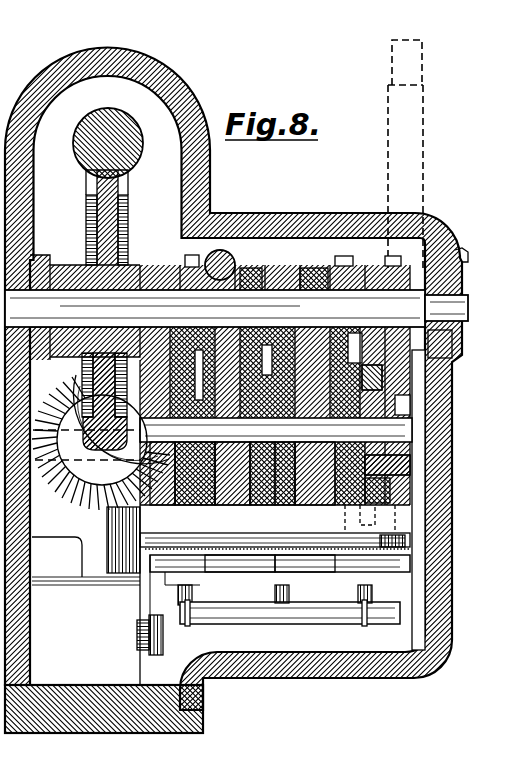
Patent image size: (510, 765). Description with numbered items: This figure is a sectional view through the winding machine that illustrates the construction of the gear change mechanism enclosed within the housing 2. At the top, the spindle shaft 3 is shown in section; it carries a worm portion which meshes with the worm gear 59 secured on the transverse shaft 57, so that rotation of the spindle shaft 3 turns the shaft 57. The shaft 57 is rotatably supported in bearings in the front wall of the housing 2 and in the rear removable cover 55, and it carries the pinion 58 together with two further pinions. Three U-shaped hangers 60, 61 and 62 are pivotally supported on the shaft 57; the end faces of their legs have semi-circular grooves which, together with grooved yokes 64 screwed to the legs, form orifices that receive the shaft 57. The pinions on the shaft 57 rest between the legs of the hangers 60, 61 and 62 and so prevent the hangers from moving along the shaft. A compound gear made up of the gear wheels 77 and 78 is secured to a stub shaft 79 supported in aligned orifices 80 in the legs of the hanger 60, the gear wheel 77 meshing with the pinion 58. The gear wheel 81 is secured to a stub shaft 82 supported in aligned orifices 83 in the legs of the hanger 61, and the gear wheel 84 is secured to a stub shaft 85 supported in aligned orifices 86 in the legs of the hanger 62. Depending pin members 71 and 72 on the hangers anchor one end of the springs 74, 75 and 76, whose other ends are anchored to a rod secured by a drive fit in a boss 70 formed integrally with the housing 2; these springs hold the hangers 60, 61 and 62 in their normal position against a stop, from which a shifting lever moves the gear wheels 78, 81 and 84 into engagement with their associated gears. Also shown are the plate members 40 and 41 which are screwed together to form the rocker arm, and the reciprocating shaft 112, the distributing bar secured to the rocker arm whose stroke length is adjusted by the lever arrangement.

The housing 2 is at (233, 389).
The spindle shaft 3 is at (112, 120).
The worm gear 59 is at (86, 205).
The pinion 58 is at (388, 267).
The reciprocating shaft 112 is at (222, 258).
The stub shaft 82 is at (258, 267).
The aligned orifices 83 is at (312, 266).
The yoke 64 is at (398, 215).
The rear removable cover 55 is at (460, 250).
The transverse shaft 57 is at (468, 300).
The gear wheel 77 is at (455, 346).
The stub shaft 79 is at (412, 430).
The aligned orifices 80 is at (415, 470).
The gear wheel 78 is at (385, 483).
The gear wheel 84 is at (197, 505).
The gear wheel 81 is at (282, 505).
The U-shaped hanger 60 is at (410, 568).
The depending pin member 71 is at (373, 592).
The depending pin member 72 is at (290, 592).
The spring 74 is at (366, 622).
The spring 75 is at (192, 592).
The spring 76 is at (190, 618).
The U-shaped hanger 62 is at (233, 600).
The U-shaped hanger 61 is at (278, 575).
The aligned orifices 86 is at (118, 517).
The stub shaft 85 is at (255, 382).
The plate member 40 is at (66, 530).
The plate member 41 is at (113, 543).
The boss 70 is at (110, 648).